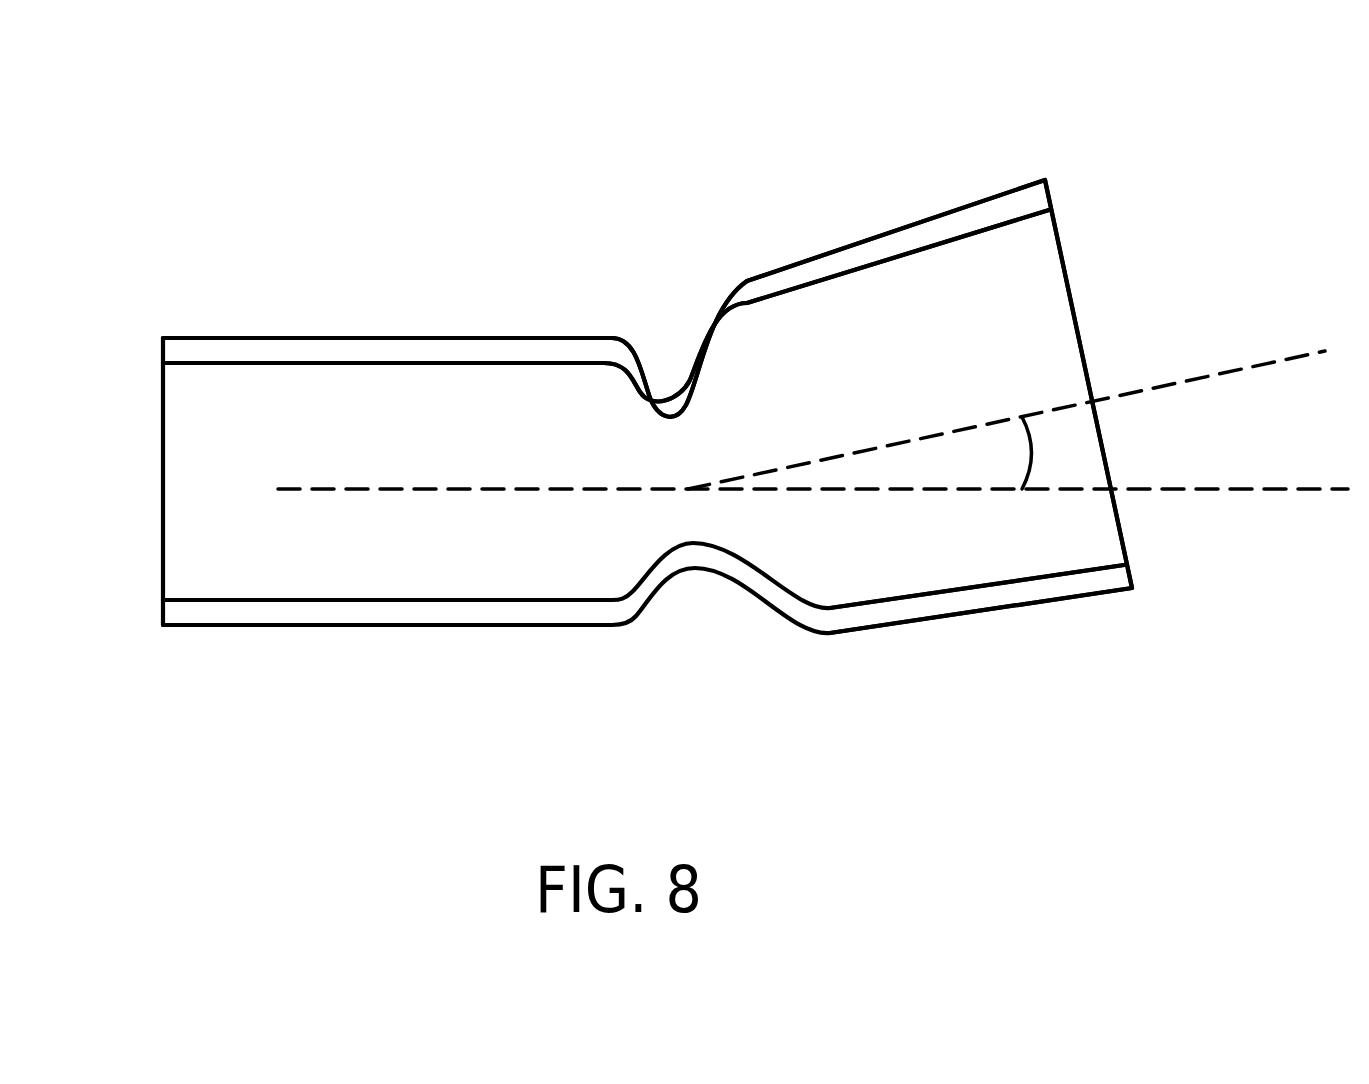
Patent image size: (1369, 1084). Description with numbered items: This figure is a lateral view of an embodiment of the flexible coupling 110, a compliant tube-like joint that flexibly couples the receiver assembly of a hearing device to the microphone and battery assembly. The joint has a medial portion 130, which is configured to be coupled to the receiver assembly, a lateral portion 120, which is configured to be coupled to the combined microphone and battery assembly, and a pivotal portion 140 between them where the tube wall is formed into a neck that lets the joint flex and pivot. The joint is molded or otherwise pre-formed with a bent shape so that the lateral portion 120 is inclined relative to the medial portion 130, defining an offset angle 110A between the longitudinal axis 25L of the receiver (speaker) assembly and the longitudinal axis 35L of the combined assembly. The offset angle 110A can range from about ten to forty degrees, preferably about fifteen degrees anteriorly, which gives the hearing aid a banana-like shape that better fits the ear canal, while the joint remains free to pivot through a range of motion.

The flexible coupling 110 is at (612, 646).
The lateral portion 120 is at (978, 206).
The medial portion 130 is at (415, 338).
The pivotal portion 140 is at (668, 395).
The longitudinal axis of speaker assembly 25L is at (162, 468).
The longitudinal axis of combined assembly 35L is at (1203, 375).
The offset angle 110A is at (1033, 450).